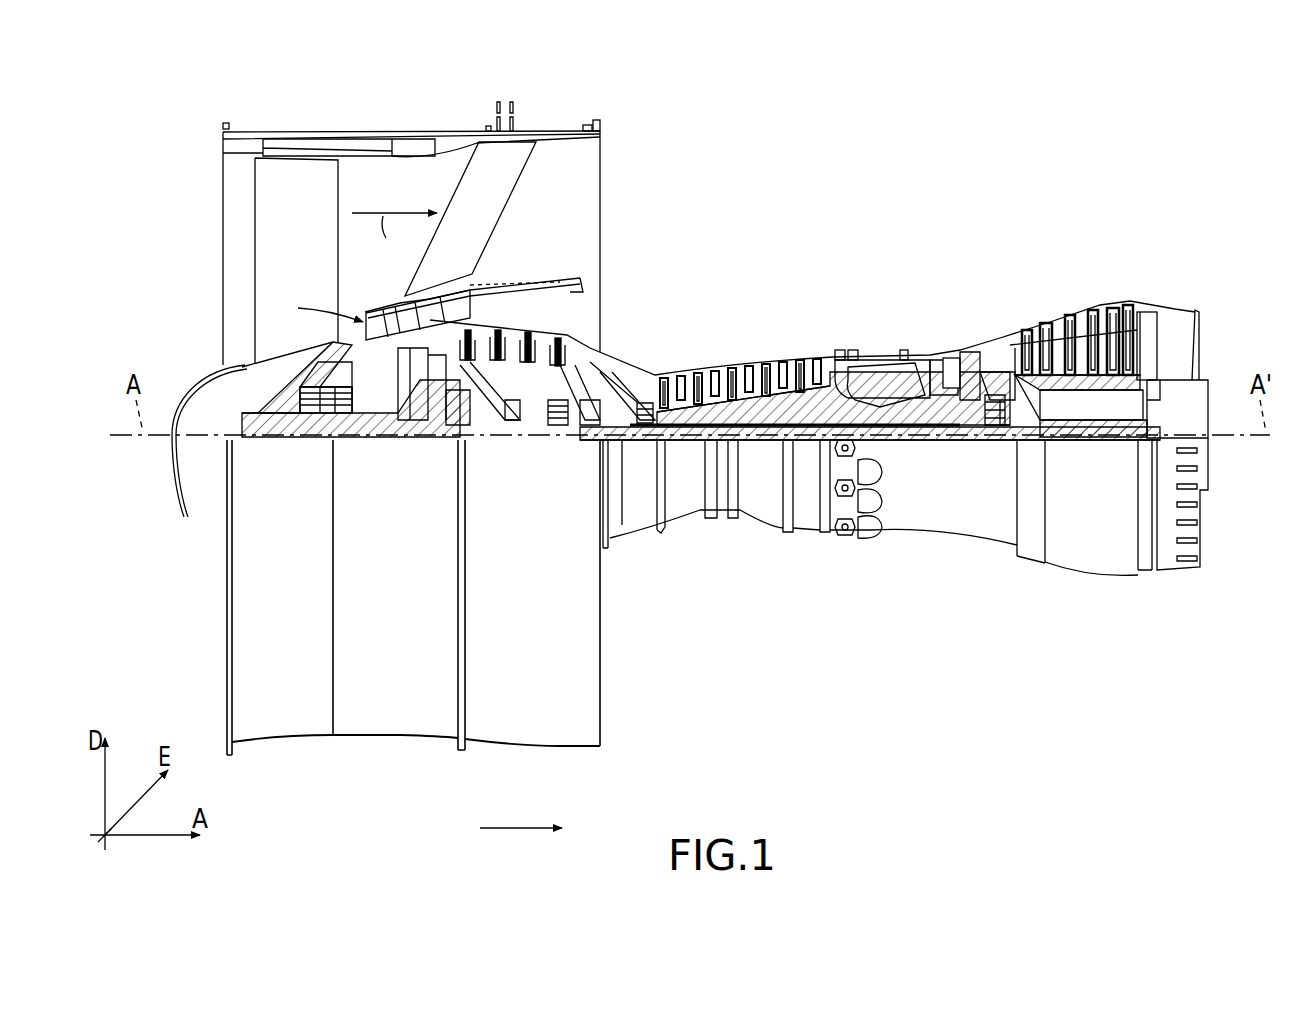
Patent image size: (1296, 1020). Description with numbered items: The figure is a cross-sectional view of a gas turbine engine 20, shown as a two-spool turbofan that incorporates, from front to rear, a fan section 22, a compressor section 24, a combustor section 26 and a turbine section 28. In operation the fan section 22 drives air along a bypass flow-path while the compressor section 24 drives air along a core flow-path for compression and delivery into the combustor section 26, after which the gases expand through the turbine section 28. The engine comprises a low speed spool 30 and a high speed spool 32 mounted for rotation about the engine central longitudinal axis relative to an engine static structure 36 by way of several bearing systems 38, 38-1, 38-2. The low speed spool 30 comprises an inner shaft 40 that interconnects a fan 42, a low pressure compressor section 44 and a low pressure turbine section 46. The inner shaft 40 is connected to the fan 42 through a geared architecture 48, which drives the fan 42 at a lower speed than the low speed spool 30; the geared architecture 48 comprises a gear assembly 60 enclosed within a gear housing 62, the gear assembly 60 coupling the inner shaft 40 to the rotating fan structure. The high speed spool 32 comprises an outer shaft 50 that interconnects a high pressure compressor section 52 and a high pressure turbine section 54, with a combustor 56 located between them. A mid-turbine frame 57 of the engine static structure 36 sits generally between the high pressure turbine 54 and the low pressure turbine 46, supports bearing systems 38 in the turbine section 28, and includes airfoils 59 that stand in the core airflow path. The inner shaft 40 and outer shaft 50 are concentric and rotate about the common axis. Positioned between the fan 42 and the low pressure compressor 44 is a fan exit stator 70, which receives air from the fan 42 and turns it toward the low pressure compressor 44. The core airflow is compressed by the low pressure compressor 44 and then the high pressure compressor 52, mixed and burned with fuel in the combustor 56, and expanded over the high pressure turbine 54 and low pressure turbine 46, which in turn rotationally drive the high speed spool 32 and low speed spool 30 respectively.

The gas turbine engine 20 is at (932, 168).
The fan section 22 is at (455, 112).
The compressor section 24 is at (468, 240).
The combustor section 26 is at (930, 240).
The turbine section 28 is at (1140, 240).
The low speed spool 30 is at (770, 446).
The high speed spool 32 is at (804, 405).
The engine static structure 36 is at (946, 512).
The bearing system 38 is at (990, 435).
The bearing system 38-1 is at (310, 410).
The bearing system 38-2 is at (558, 425).
The inner shaft 40 is at (627, 440).
The fan 42 is at (296, 260).
The low pressure compressor section 44 is at (536, 336).
The low pressure turbine section 46 is at (1078, 328).
The geared architecture 48 is at (424, 455).
The outer shaft 50 is at (876, 430).
The high pressure compressor section 52 is at (746, 405).
The high pressure turbine section 54 is at (948, 360).
The combustor 56 is at (876, 378).
The mid-turbine frame 57 is at (976, 362).
The airfoils 59 is at (996, 372).
The gear assembly 60 is at (430, 418).
The gear housing 62 is at (430, 388).
The fan exit stator 70 is at (372, 312).